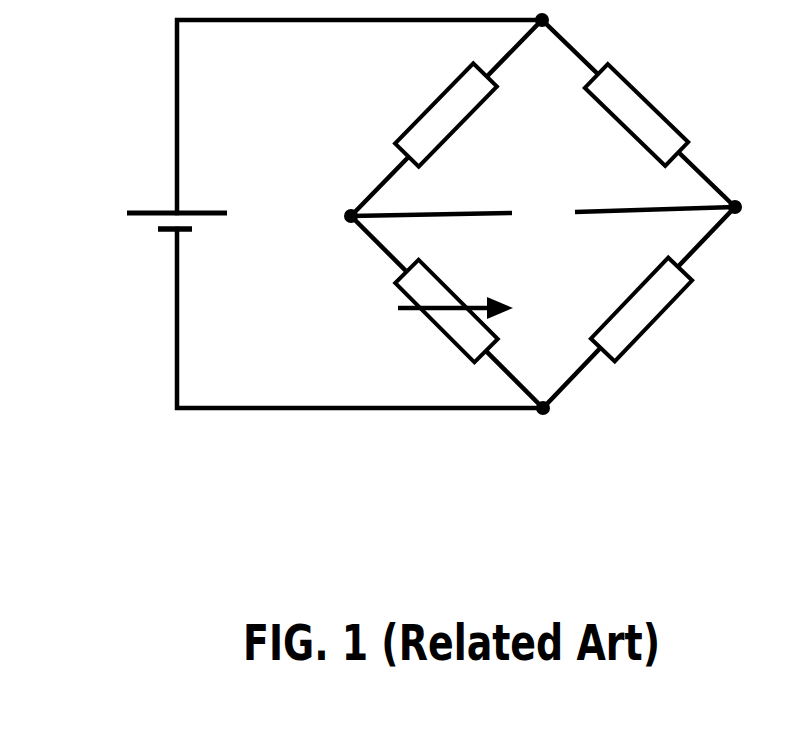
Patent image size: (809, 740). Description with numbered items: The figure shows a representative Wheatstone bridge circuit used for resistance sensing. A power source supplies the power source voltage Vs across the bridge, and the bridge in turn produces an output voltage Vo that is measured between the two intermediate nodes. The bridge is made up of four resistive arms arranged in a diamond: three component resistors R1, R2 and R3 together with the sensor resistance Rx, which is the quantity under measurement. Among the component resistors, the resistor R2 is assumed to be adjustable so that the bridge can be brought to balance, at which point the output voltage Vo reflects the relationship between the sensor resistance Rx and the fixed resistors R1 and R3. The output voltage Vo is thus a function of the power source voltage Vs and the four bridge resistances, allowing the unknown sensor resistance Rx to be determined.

The component resistor R1 is at (429, 111).
The adjustable component resistor R2 is at (428, 311).
The component resistor R3 is at (660, 115).
The sensor resistance Rx is at (656, 315).
The power source voltage Vs is at (152, 218).
The output voltage Vo is at (543, 216).